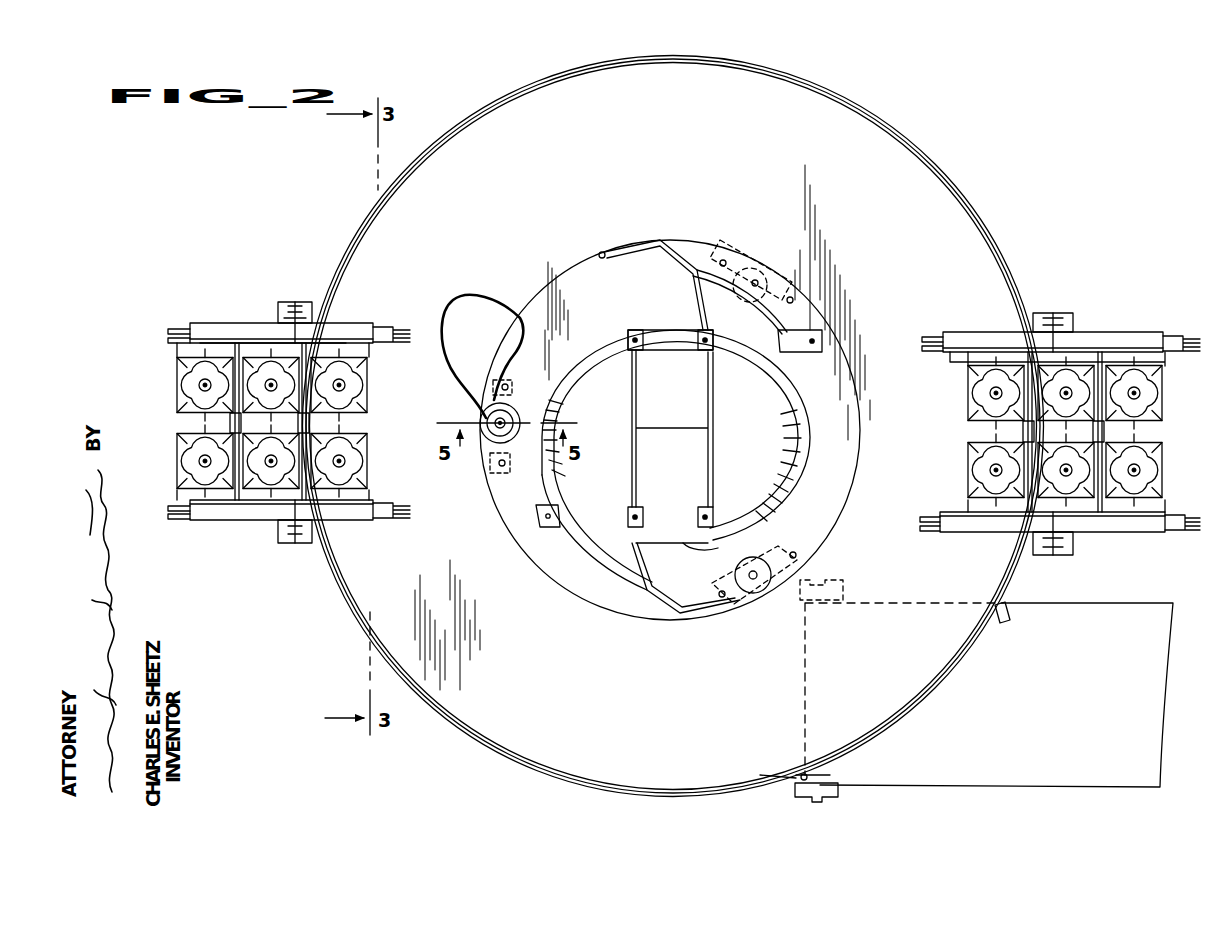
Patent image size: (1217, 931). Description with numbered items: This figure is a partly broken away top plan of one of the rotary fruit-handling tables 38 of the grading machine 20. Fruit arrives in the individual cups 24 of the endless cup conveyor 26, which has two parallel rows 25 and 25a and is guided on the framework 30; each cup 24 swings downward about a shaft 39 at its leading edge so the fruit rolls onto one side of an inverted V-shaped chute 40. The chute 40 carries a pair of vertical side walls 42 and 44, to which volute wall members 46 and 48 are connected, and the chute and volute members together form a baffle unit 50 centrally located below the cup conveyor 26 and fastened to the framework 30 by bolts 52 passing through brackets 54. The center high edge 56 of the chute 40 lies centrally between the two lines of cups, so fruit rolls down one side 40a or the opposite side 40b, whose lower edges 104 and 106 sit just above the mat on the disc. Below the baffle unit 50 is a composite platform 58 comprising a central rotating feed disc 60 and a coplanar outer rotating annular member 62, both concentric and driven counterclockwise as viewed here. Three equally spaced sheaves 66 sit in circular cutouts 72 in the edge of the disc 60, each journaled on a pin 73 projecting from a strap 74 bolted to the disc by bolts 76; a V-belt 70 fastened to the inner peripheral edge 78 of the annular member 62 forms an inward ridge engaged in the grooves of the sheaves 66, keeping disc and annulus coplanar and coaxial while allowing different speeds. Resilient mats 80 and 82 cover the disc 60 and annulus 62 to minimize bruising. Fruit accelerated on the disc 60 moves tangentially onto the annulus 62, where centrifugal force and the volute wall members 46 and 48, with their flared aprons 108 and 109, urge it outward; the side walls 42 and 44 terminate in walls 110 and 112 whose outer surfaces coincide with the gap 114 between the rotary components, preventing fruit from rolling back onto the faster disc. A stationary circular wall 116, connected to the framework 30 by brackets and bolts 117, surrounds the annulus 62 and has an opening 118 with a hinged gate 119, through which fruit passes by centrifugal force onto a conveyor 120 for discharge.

The grading machine 20 is at (1046, 250).
The cups 24 is at (196, 385).
The row of cups 25 is at (172, 365).
The row of cups 25a is at (172, 465).
The cup conveyor 26 is at (255, 403).
The framework 30 is at (280, 305).
The rotary table 38 is at (924, 132).
The shaft 39 is at (230, 421).
The inverted V-shaped chute 40 is at (716, 387).
The side of chute 40a is at (671, 367).
The side of chute 40b is at (668, 452).
The vertical side wall 42 is at (632, 444).
The vertical side wall 44 is at (713, 460).
The volute wall member 46 is at (574, 552).
The volute wall member 48 is at (796, 405).
The baffle unit 50 is at (710, 244).
The bolts 52 is at (705, 516).
The brackets 54 is at (698, 340).
The center high edge 56 is at (654, 428).
The composite platform 58 is at (764, 122).
The feed disc 60 is at (517, 351).
The annular member 62 is at (483, 354).
The sheaves 66 is at (488, 414).
The V-belt 70 is at (490, 474).
The circular cutout 72 is at (540, 384).
The pin 73 is at (494, 421).
The strap 74 is at (512, 456).
The bolts 76 is at (496, 385).
The inner peripheral edge 78 is at (516, 338).
The resilient mat 80 is at (670, 430).
The resilient mat 82 is at (652, 130).
The lower edge 104 is at (668, 330).
The lower edge 106 is at (705, 547).
The flared apron 108 is at (598, 573).
The flared apron 109 is at (775, 502).
The wall 110 is at (686, 606).
The wall 112 is at (680, 256).
The gap 114 is at (580, 260).
The circular wall 116 is at (602, 58).
The brackets and bolts 117 is at (313, 310).
The opening 118 is at (990, 608).
The hinged gate 119 is at (930, 687).
The conveyor 120 is at (986, 683).